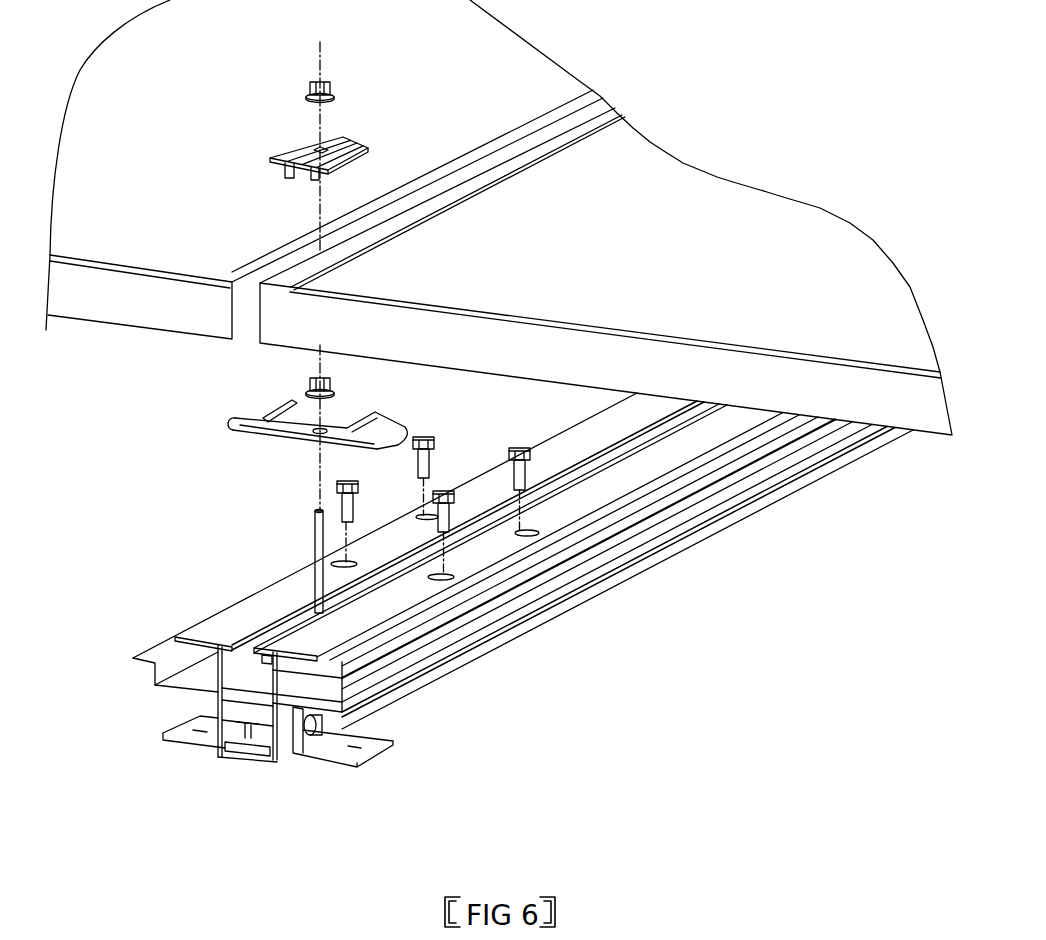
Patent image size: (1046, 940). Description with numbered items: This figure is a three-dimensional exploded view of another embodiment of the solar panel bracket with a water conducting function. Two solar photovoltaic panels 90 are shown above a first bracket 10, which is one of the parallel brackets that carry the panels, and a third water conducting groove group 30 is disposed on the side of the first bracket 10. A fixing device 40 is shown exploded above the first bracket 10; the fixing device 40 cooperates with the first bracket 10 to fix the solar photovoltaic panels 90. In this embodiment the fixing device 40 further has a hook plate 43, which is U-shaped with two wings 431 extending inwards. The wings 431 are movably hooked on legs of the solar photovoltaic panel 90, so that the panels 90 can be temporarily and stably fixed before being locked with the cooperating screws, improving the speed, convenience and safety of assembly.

The first bracket 10 is at (250, 610).
The third water conducting groove group 30 is at (168, 688).
The fixing device 40 is at (360, 135).
The hook plate 43 is at (289, 436).
The wing 431 is at (265, 412).
The solar photovoltaic panel 90 is at (768, 218).